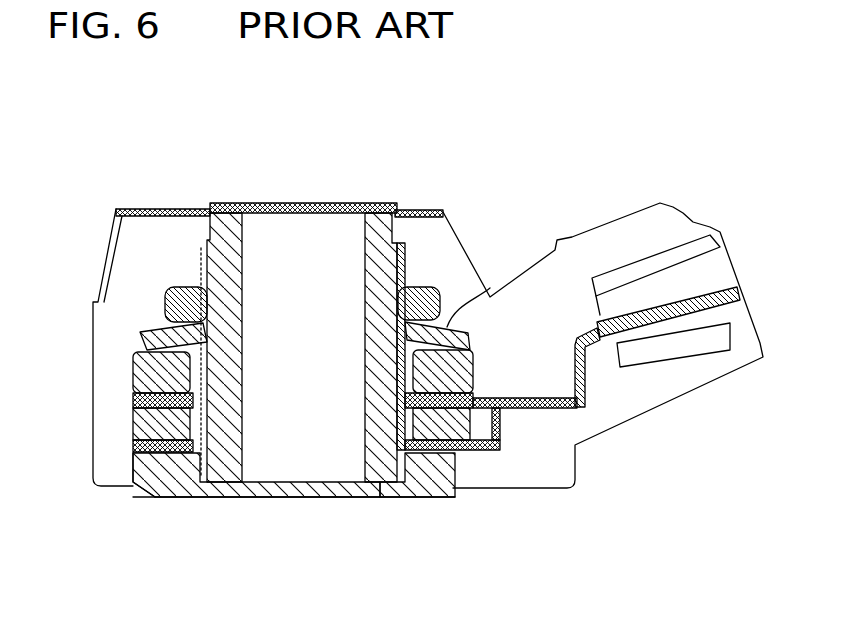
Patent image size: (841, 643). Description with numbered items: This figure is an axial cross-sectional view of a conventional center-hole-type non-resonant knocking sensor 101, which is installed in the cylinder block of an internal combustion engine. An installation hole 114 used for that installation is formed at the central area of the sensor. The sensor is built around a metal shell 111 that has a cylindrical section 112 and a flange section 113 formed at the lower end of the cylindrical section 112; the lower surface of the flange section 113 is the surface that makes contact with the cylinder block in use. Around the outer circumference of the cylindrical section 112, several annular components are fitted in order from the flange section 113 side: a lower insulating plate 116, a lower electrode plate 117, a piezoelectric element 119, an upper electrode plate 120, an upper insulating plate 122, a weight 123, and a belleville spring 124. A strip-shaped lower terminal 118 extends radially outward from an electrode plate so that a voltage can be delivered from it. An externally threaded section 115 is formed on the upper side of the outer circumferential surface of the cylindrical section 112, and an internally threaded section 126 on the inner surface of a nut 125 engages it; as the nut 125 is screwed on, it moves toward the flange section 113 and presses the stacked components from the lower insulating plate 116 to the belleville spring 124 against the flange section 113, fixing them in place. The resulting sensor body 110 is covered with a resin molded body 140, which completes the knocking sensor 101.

The knocking sensor 101 is at (445, 129).
The sensor body 110 is at (235, 192).
The metal shell 111 is at (438, 557).
The cylindrical section 112 is at (352, 475).
The flange section 113 is at (410, 488).
The installation hole 114 is at (300, 204).
The externally threaded section 115 is at (405, 262).
The lower insulating plate 116 is at (130, 450).
The lower electrode plate 117 is at (193, 446).
The lower terminal 118 is at (703, 290).
The piezoelectric element 119 is at (130, 427).
The upper electrode plate 120 is at (193, 402).
The upper insulating plate 122 is at (130, 396).
The weight 123 is at (130, 373).
The belleville spring 124 is at (490, 288).
The nut 125 is at (423, 287).
The internally threaded section 126 is at (397, 298).
The resin molded body 140 is at (175, 210).